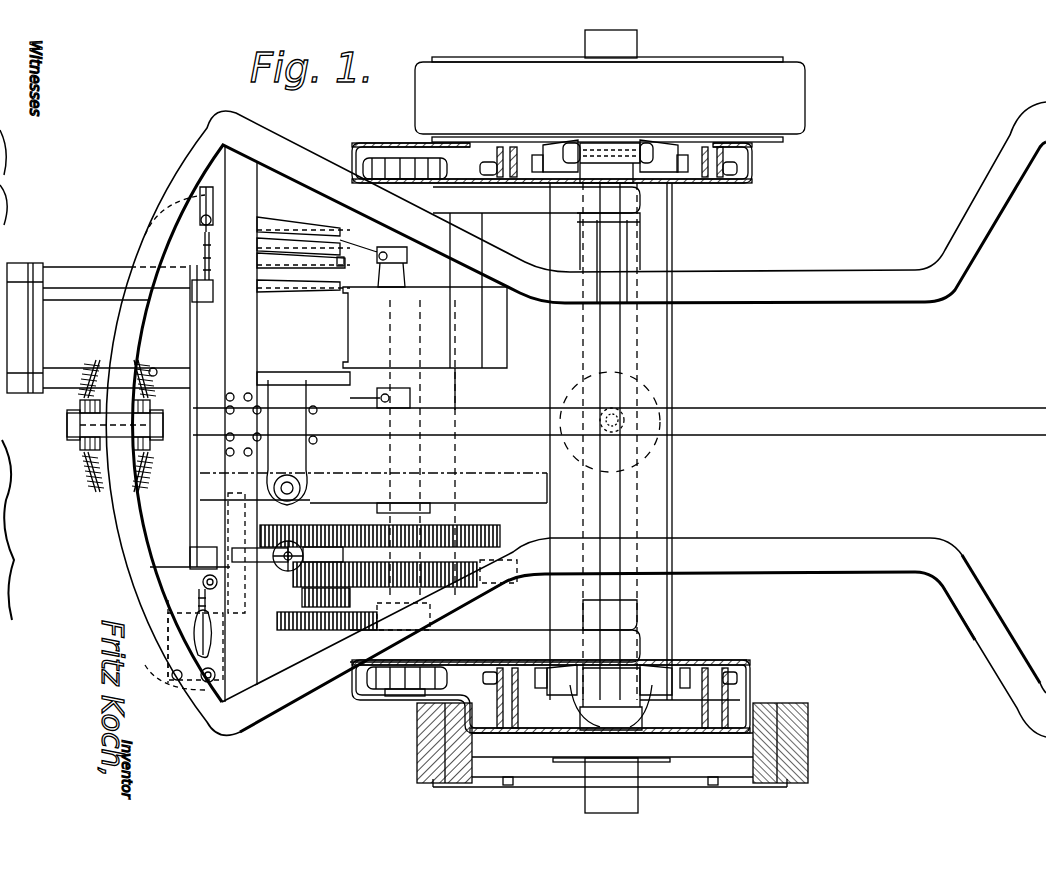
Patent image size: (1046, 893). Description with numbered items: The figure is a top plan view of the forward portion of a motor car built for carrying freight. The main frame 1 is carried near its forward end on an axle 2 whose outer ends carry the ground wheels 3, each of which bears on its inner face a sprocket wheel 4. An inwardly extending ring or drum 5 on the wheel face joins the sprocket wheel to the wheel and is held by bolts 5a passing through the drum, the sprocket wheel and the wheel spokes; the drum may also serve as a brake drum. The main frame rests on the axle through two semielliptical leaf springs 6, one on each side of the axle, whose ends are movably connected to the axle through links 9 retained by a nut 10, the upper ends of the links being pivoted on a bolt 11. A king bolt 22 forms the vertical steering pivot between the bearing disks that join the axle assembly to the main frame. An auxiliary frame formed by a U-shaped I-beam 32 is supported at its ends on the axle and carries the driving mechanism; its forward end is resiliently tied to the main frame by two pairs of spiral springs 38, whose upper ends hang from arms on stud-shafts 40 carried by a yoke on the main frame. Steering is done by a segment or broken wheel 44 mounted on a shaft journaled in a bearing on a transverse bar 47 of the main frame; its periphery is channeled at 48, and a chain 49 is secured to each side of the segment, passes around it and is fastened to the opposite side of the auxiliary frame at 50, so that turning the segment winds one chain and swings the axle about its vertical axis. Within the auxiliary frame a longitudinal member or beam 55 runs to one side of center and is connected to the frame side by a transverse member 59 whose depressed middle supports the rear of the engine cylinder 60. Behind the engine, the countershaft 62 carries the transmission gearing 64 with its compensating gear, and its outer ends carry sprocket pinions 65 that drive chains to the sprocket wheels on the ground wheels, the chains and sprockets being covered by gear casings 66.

The main frame 1 is at (285, 152).
The axle 2 is at (615, 253).
The ground wheels 3 is at (790, 108).
The sprocket wheels 4 is at (753, 167).
The ring or drum 5 is at (500, 147).
The bolts 5a is at (740, 132).
The semielliptical leaf springs 6 is at (549, 605).
The links 9 is at (555, 150).
The nut 10 is at (538, 154).
The bolt 11 is at (612, 140).
The king bolt 22 is at (622, 414).
The I-beam (auxiliary frame) 32 is at (202, 200).
The spiral springs 38 is at (138, 368).
The stud-shafts 40 is at (67, 428).
The segment or broken wheel 44 is at (190, 346).
The transverse bar 47 is at (258, 336).
The channel 48 is at (198, 280).
The chain 49 is at (212, 228).
The chain connection point 50 is at (200, 190).
The longitudinal member or beam 55 is at (500, 478).
The transverse member 59 is at (452, 396).
The engine cylinder 60 is at (80, 268).
The countershaft 62 is at (420, 510).
The transmission gearing 64 is at (323, 524).
The sprocket pinions 65 is at (372, 158).
The gear casings 66 is at (735, 660).